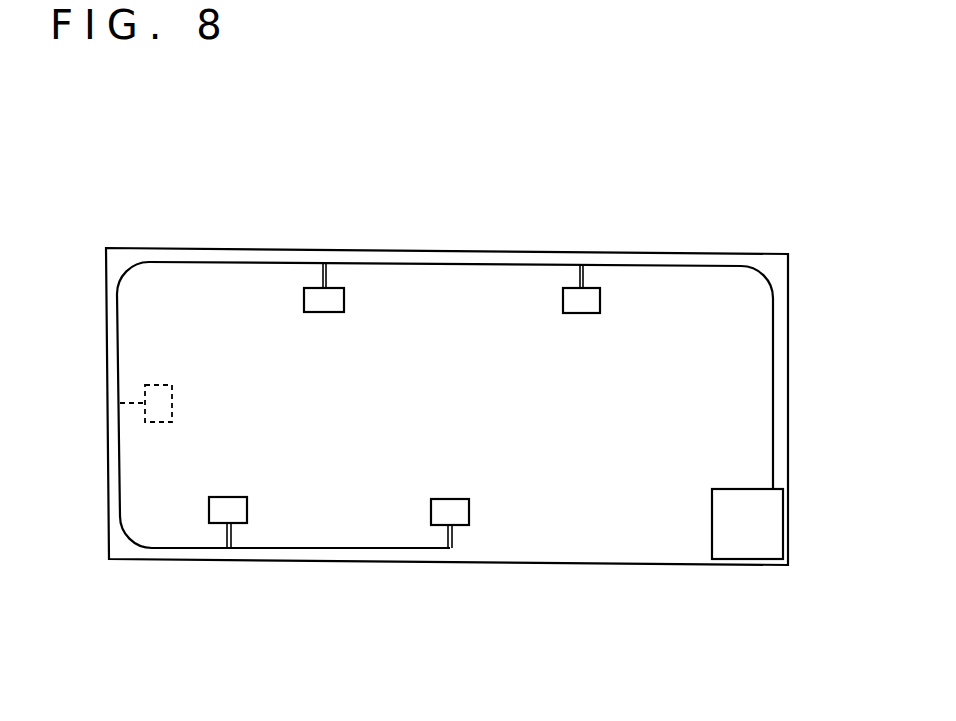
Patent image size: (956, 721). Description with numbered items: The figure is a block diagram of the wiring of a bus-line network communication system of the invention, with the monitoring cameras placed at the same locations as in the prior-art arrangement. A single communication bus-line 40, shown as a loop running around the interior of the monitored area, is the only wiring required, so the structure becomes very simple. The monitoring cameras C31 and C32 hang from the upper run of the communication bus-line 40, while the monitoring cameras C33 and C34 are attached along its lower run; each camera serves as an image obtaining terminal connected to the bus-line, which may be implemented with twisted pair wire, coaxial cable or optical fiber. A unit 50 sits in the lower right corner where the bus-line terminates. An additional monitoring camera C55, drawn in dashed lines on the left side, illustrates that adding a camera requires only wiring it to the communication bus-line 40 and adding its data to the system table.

The communication bus-line 40 is at (430, 264).
The control unit 50 is at (776, 533).
The monitoring camera C31 is at (337, 294).
The monitoring camera C32 is at (587, 295).
The monitoring camera C33 is at (456, 520).
The monitoring camera C34 is at (240, 517).
The additional monitoring camera C55 is at (148, 386).